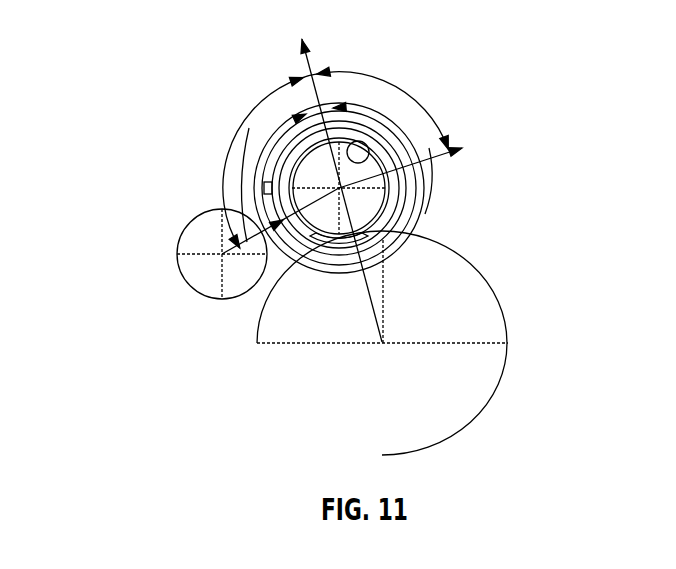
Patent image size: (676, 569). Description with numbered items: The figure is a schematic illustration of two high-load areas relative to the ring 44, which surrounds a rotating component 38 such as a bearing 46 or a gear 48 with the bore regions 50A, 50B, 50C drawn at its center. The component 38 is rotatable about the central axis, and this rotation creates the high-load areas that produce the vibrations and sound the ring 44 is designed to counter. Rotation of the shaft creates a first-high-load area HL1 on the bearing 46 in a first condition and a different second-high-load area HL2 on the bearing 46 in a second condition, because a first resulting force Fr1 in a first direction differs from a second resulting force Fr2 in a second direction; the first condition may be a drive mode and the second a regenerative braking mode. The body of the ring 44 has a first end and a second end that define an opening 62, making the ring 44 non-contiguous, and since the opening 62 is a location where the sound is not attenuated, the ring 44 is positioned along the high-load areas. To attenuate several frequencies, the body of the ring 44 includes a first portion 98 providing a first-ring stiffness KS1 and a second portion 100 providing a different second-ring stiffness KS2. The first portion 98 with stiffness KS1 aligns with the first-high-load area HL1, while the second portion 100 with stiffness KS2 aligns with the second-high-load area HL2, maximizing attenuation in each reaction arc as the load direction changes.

The component 38 is at (315, 256).
The gear 48 is at (373, 118).
The bearing 46 is at (385, 255).
The first portion 98 is at (212, 166).
The ring 44 is at (278, 166).
The hub bore section 50A is at (219, 188).
The hub bore section 50B is at (219, 188).
The hub bore section 50C is at (262, 187).
The opening 62 is at (300, 246).
The second portion 100 is at (465, 46).
The first resulting force Fr1 is at (332, 173).
The second resulting force Fr2 is at (421, 162).
The first-high-load area HL1 is at (287, 127).
The second-high-load area HL2 is at (365, 142).
The first-ring stiffness KS1 is at (290, 122).
The second-ring stiffness KS2 is at (420, 222).